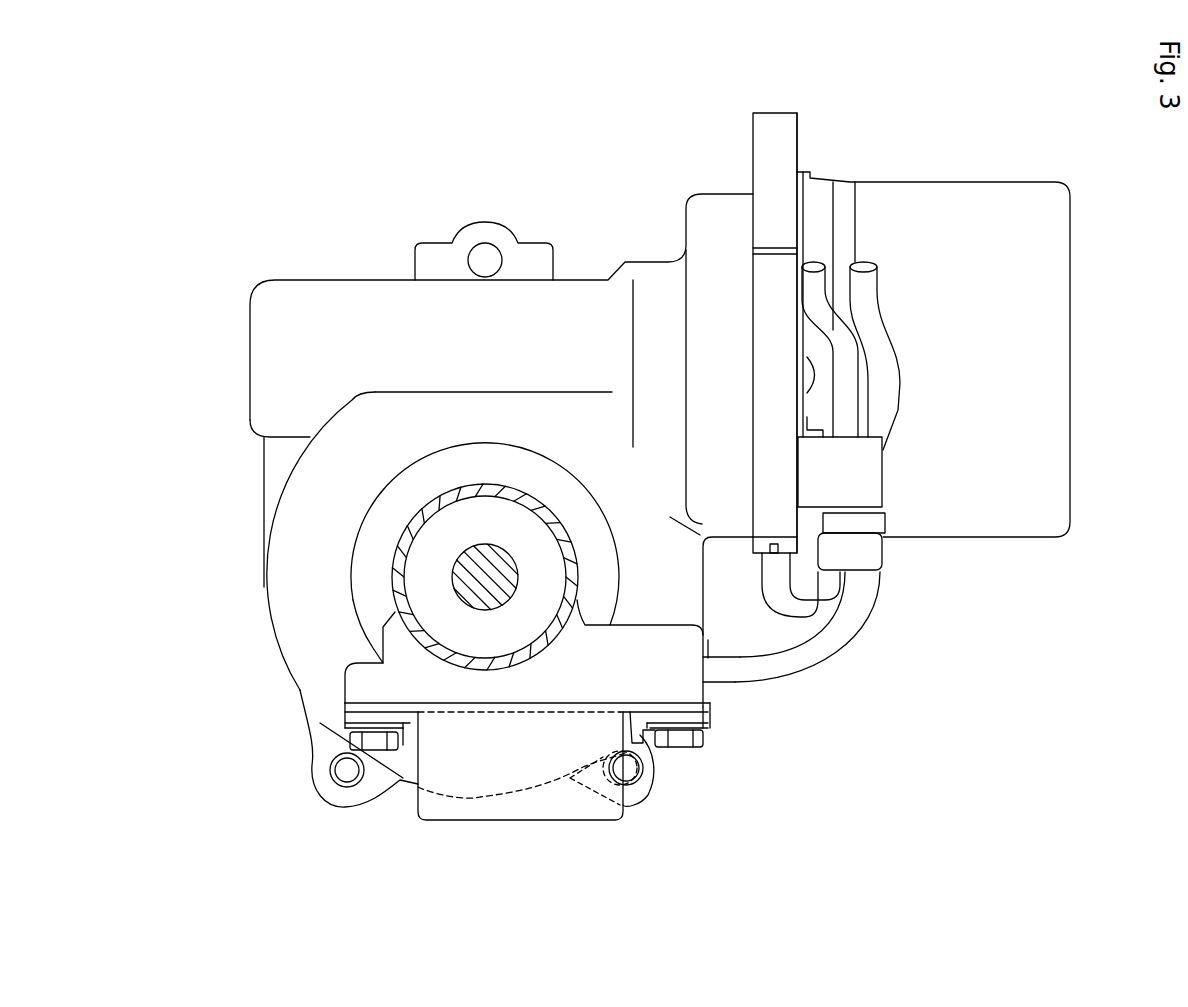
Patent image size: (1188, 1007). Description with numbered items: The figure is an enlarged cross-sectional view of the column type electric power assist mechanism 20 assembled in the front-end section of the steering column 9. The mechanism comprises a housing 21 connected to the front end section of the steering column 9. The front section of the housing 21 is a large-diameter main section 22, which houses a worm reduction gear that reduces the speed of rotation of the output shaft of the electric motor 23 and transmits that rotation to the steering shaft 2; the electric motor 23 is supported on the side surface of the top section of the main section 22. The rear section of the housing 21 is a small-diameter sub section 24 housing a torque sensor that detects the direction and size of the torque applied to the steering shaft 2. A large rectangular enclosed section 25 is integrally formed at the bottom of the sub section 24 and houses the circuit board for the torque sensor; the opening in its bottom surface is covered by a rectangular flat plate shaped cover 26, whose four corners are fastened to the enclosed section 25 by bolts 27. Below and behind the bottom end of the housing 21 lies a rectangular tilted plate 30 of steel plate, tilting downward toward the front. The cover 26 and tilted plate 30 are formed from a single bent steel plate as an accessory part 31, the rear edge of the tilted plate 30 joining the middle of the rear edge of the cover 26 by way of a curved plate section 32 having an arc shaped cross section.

The column type electric power assist mechanism 20 is at (576, 270).
The housing 21 is at (390, 410).
The main section 22 is at (445, 410).
The electric motor 23 is at (953, 207).
The sub section 24 is at (363, 582).
The steering column 9 is at (432, 510).
The steering shaft 2 is at (467, 563).
The enclosed section 25 is at (640, 640).
The cover 26 is at (703, 697).
The bolts 27 is at (377, 743).
The tilted plate 30 is at (482, 777).
The accessory part 31 is at (583, 757).
The curved plate section 32 is at (445, 712).